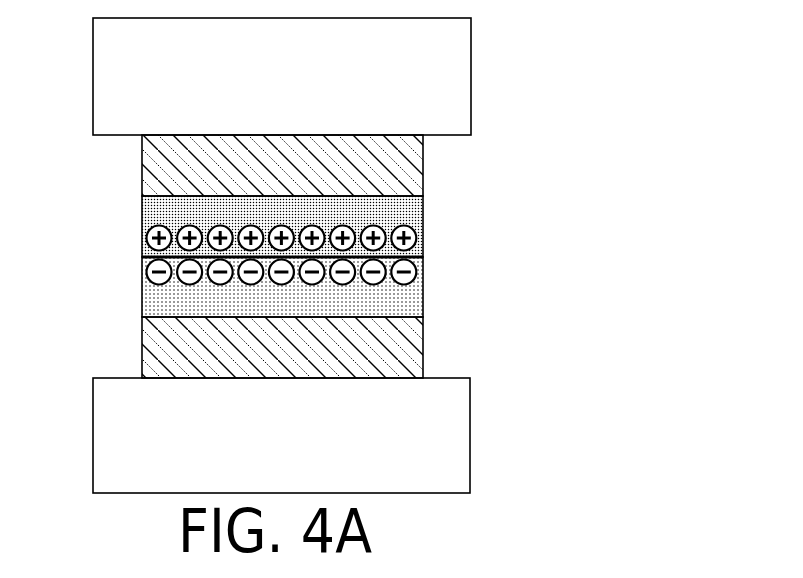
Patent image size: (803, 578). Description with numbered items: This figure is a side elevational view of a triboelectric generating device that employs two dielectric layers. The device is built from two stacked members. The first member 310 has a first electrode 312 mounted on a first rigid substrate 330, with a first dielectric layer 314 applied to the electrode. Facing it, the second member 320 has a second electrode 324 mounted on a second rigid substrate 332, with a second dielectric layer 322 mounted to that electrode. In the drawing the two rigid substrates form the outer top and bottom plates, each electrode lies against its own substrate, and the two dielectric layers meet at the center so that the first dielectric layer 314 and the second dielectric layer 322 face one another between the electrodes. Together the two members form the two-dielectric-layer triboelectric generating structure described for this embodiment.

The first member 310 is at (286, 317).
The first electrode 312 is at (142, 338).
The first dielectric layer 314 is at (142, 284).
The second member 320 is at (283, 196).
The second dielectric layer 322 is at (142, 214).
The second electrode 324 is at (142, 156).
The first rigid substrate 330 is at (93, 430).
The second rigid substrate 332 is at (93, 72).